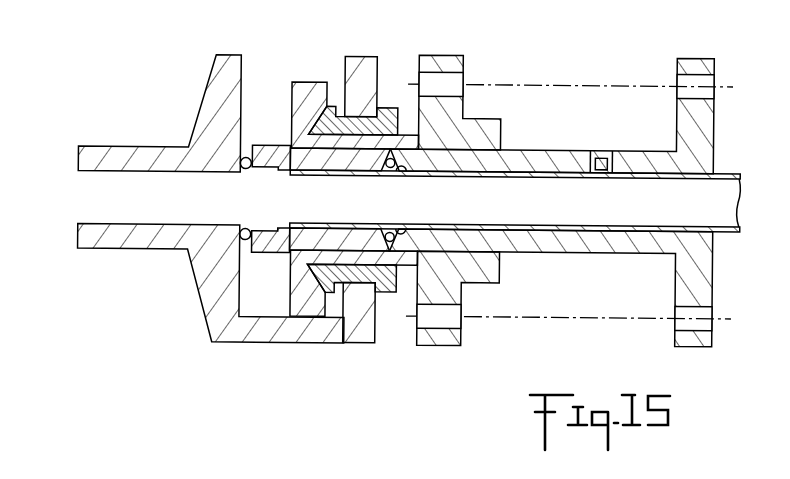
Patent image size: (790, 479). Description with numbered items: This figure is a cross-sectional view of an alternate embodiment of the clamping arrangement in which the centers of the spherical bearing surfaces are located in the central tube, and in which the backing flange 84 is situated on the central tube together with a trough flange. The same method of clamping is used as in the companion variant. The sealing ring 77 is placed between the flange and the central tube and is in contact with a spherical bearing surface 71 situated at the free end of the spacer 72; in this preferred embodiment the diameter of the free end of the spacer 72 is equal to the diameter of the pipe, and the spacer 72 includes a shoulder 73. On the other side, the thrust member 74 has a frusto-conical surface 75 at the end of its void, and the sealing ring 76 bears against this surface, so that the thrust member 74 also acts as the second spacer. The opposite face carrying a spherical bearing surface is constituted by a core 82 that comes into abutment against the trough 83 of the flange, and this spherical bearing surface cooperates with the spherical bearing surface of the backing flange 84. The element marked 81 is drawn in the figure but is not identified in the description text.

The spherical bearing surface 71 is at (248, 158).
The spacer 72 is at (270, 156).
The shoulder 73 is at (281, 229).
The thrust member 74 is at (566, 161).
The frusto-conical surface 75 is at (406, 172).
The sealing ring 76 is at (388, 170).
The sealing ring 77 is at (237, 165).
The gland ring 81 is at (322, 111).
The core 82 is at (388, 294).
The trough 83 is at (325, 337).
The backing flange 84 is at (316, 287).